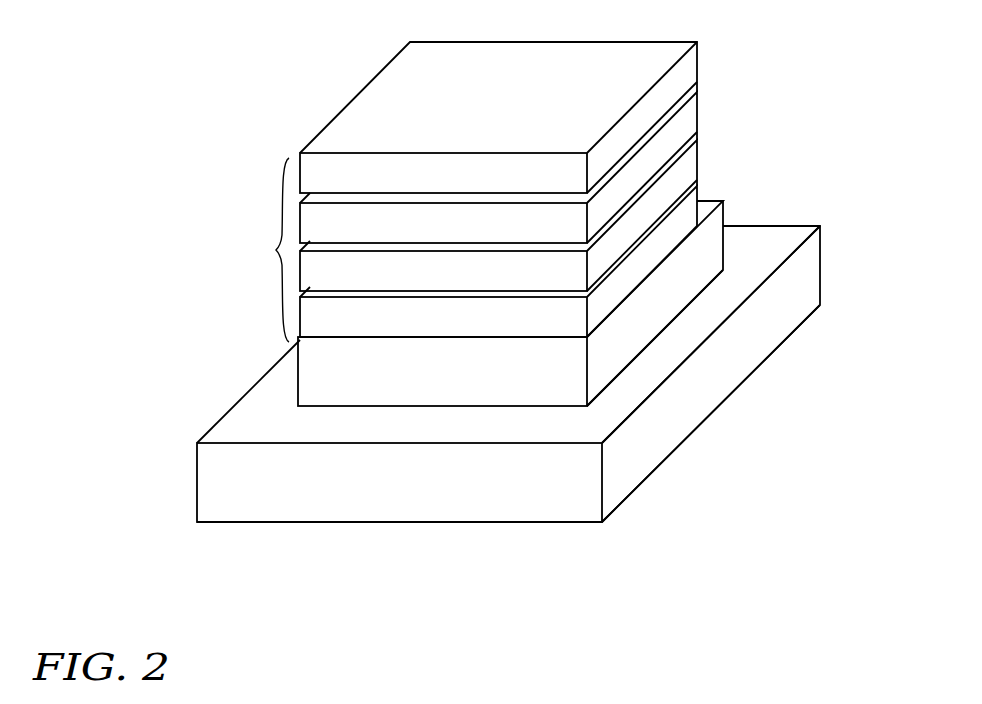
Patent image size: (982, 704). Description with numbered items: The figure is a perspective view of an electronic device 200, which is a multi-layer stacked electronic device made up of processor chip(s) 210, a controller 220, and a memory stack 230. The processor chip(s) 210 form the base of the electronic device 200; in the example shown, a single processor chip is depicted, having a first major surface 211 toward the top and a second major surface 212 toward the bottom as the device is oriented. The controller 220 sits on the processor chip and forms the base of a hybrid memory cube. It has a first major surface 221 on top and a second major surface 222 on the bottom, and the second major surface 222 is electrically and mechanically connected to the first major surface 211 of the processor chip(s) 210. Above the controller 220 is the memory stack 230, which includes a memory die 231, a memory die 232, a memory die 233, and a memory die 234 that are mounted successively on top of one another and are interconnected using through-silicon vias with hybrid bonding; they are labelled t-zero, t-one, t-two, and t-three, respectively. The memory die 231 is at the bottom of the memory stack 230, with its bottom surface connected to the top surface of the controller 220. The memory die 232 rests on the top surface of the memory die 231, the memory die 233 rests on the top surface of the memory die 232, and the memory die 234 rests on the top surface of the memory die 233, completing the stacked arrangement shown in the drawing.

The electronic device 200 is at (118, 33).
The processor chip(s) 210 is at (197, 488).
The first major surface 211 is at (593, 423).
The second major surface 212 is at (606, 531).
The controller 220 is at (297, 377).
The first major surface 221 is at (718, 199).
The second major surface 222 is at (665, 340).
The memory stack 230 is at (818, 39).
The memory die 231 is at (697, 193).
The memory die 232 is at (697, 155).
The memory die 233 is at (697, 115).
The memory die 234 is at (697, 62).